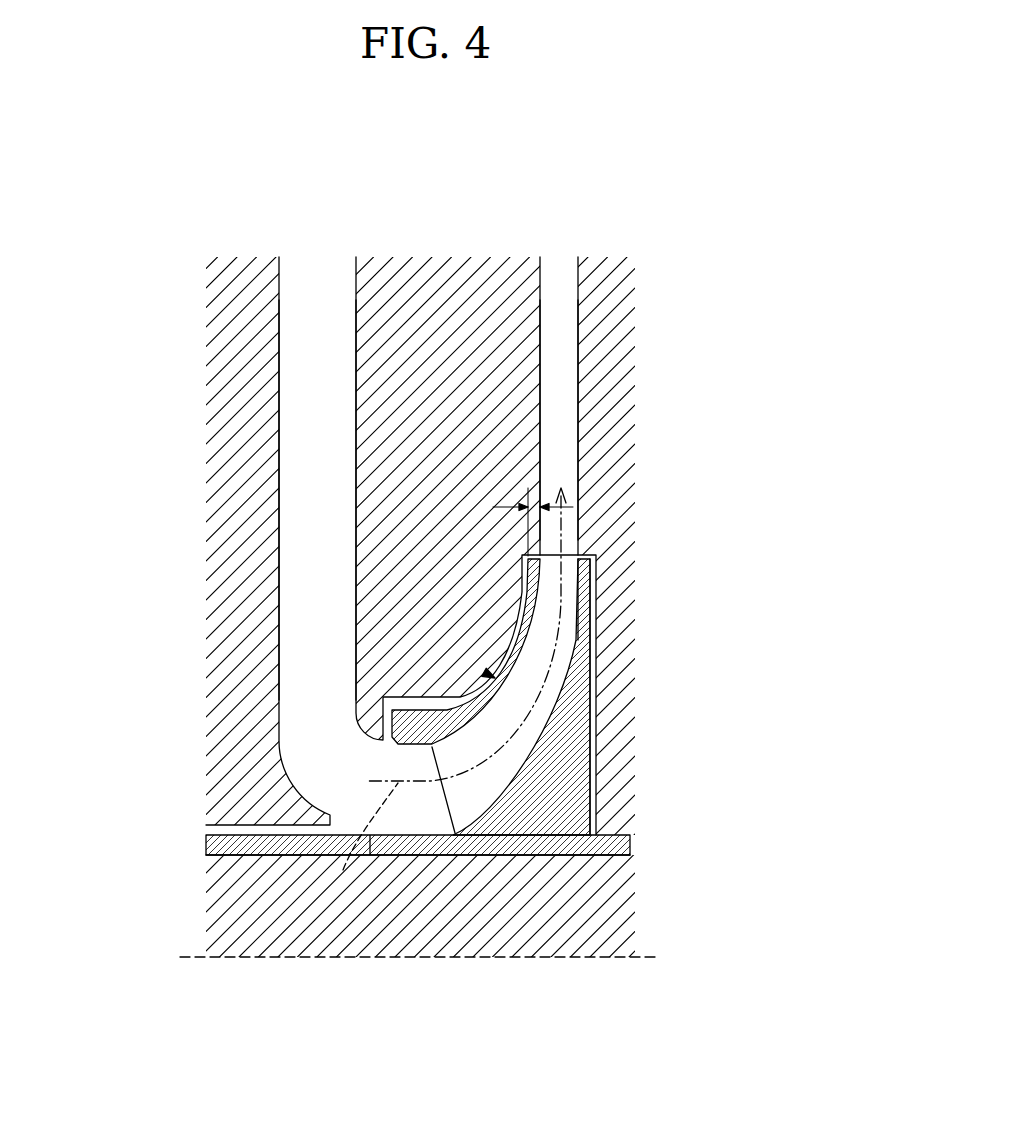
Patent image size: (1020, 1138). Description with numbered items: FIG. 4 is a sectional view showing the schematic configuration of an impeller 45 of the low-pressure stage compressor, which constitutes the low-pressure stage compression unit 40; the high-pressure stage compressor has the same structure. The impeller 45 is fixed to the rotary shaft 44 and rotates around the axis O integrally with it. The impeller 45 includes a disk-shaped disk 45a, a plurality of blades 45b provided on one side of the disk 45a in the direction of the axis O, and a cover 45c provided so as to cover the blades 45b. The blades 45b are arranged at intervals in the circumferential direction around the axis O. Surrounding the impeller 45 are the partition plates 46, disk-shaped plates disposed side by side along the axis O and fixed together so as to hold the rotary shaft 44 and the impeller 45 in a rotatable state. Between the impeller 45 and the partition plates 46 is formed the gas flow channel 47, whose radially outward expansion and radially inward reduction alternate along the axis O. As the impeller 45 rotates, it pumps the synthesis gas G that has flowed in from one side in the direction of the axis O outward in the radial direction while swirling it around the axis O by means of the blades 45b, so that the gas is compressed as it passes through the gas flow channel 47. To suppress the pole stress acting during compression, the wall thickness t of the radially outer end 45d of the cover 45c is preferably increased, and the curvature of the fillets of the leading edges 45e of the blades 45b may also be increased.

The partition plate 46 is at (388, 281).
The gas flow channel 47 is at (300, 350).
The rotary shaft 44 is at (600, 906).
The impeller 45 is at (433, 749).
The disk 45a is at (592, 725).
The blade 45b is at (515, 746).
The cover 45c is at (545, 645).
The radially outer end 45d is at (522, 562).
The leading edge 45e is at (455, 833).
The low-pressure stage compression unit 40 is at (484, 671).
The wall thickness t is at (545, 458).
The synthesis gas G is at (343, 870).
The axis O is at (660, 962).